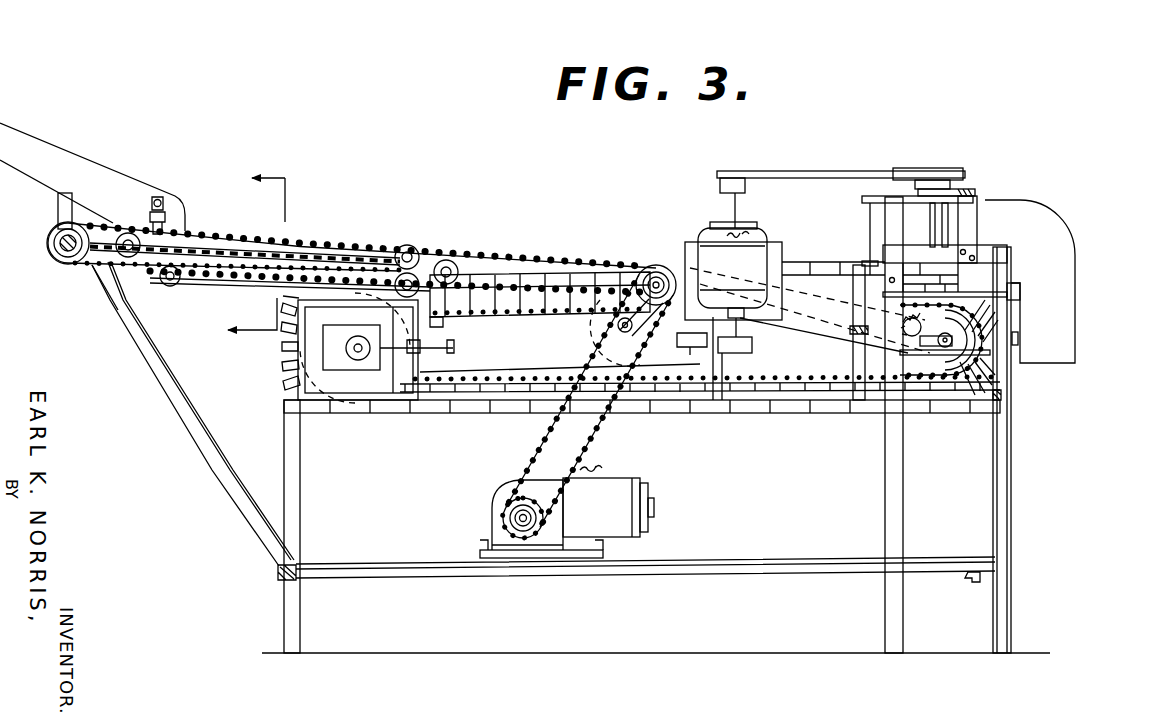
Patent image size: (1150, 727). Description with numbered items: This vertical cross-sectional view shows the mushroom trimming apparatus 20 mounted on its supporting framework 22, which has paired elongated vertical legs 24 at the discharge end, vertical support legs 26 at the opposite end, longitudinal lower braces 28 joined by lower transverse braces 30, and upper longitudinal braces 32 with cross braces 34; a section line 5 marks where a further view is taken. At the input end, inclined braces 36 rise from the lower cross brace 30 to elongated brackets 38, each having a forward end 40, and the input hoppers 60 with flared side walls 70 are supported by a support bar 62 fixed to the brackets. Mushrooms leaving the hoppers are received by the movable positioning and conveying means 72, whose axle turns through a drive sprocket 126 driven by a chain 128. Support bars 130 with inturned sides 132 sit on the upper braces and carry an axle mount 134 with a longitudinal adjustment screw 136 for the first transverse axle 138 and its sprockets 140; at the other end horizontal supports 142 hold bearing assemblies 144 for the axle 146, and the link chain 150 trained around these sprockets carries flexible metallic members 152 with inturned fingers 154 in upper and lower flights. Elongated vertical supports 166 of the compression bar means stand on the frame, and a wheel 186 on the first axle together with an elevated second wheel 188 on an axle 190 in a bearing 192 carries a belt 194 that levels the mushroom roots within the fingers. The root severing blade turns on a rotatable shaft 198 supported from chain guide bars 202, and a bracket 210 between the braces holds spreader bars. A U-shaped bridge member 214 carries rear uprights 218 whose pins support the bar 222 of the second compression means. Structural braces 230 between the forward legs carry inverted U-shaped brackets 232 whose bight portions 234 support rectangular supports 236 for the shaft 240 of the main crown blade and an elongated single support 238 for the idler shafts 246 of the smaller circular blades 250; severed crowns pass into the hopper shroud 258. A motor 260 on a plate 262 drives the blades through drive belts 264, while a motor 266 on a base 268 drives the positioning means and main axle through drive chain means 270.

The section line 5- 5 is at (256, 263).
The apparatus 20 is at (1020, 416).
The supporting framework 22 is at (1014, 512).
The elongated vertical legs 24 is at (905, 623).
The vertical support legs 26 is at (300, 626).
The longitudinal lower braces 28 is at (727, 567).
The lower transverse braces 30 is at (300, 580).
The upper longitudinal braces 32 is at (315, 413).
The cross braces 34 is at (1005, 395).
The inclined braces 36 is at (206, 455).
The elongated brackets 38 is at (106, 310).
The forward end 40 is at (430, 262).
The input hoppers 60 is at (85, 151).
The support bar 62 is at (60, 206).
The side walls 70 is at (100, 194).
The movable positioning and conveying means 72 is at (310, 224).
The drive sprocket 126 is at (58, 267).
The chain 128 is at (96, 265).
The support bars 130 is at (418, 376).
The inturned sides 132 is at (305, 300).
The axle mount 134 is at (375, 400).
The longitudinal adjustment screw 136 is at (425, 346).
The first transverse axle 138 is at (300, 368).
The sprockets 140 is at (290, 340).
The horizontal supports 142 is at (965, 396).
The bearing assemblies 144 is at (930, 400).
The axle 146 is at (950, 342).
The link chain 150 is at (815, 372).
The flexible metallic members 152 is at (766, 412).
The inturned fingers 154 is at (831, 264).
The elongated vertical supports 166 is at (527, 405).
The wheel 186 is at (360, 400).
The second wheel 188 is at (652, 372).
The axle 190 is at (662, 342).
The bearing 192 is at (640, 268).
The belt 194 is at (521, 380).
The rotatable shaft 198 is at (725, 370).
The chain guide bars 202 is at (540, 320).
The bracket 210 is at (715, 368).
The U-shaped bridge member 214 is at (856, 392).
The rear uprights 218 is at (876, 320).
The bar 222 is at (928, 283).
The structural braces 230 is at (995, 250).
The inverted U-shaped brackets 232 is at (986, 205).
The bight portions 234 is at (972, 213).
The rectangular supports 236 is at (945, 189).
The elongated single support 238 is at (888, 196).
The shaft 240 is at (930, 237).
The idler shafts 246 is at (878, 233).
The circular blades 250 is at (870, 256).
The hopper shroud 258 is at (1070, 263).
The motor 260 is at (732, 287).
The plate 262 is at (805, 250).
The drive belts 264 is at (802, 172).
The motor 266 is at (630, 538).
The base 268 is at (545, 560).
The drive chain means 270 is at (580, 470).